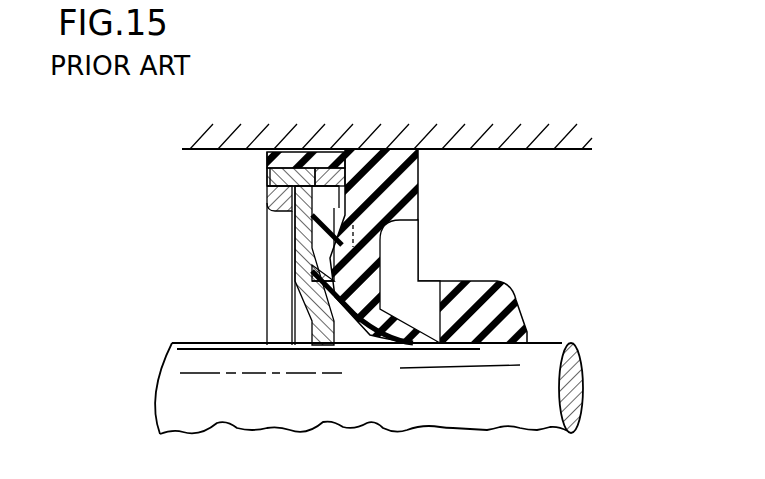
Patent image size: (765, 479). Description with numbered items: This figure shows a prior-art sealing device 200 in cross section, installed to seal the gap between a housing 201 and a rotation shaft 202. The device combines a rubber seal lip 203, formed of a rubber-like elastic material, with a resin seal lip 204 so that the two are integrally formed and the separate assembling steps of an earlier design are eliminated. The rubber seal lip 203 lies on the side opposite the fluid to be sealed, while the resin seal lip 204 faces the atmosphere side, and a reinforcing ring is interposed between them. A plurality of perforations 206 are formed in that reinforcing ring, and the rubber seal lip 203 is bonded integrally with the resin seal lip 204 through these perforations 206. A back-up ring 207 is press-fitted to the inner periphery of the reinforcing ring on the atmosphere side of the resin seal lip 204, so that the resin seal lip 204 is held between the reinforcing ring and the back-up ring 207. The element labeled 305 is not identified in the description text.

The sealing device 200 is at (180, 197).
The housing 201 is at (565, 150).
The rotation shaft 202 is at (560, 343).
The rubber seal lip 203 is at (392, 268).
The resin seal lip 204 is at (295, 300).
The perforations 206 is at (380, 215).
The back-up ring 207 is at (290, 235).
The outer case flange 305 is at (328, 162).